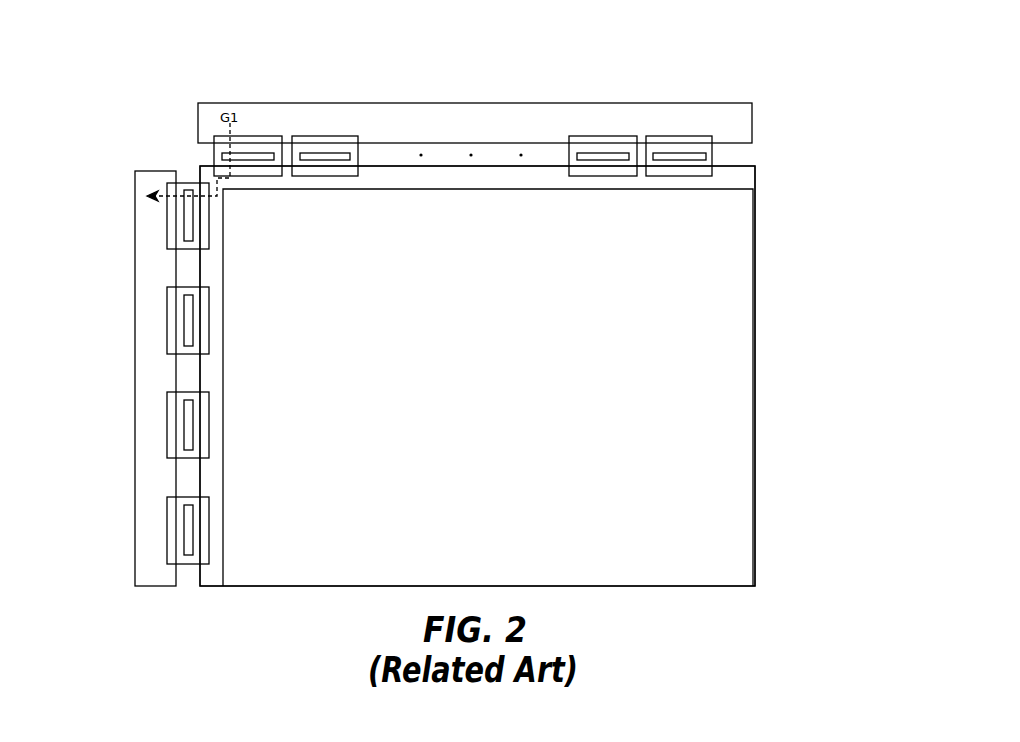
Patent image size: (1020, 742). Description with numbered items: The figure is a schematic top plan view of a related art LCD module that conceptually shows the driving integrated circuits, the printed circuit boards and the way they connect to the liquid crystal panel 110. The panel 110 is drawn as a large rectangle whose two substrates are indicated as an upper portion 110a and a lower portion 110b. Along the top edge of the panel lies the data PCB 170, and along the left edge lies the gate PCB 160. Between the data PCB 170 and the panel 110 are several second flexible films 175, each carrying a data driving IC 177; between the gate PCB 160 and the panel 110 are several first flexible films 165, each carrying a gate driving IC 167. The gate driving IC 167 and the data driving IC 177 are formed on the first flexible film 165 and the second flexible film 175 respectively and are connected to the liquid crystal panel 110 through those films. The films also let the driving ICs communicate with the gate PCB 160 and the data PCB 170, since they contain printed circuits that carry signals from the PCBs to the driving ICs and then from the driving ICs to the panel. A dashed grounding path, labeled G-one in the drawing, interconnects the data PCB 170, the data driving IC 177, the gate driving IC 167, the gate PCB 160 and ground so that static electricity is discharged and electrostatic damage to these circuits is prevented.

The liquid crystal panel 110 is at (858, 182).
The upper substrate 110a is at (742, 178).
The lower substrate 110b is at (742, 265).
The gate PCB 160 is at (140, 277).
The first flexible film 165 is at (170, 332).
The gate driving IC 167 is at (183, 417).
The data PCB 170 is at (468, 110).
The second flexible film 175 is at (310, 136).
The data driving IC 177 is at (263, 152).